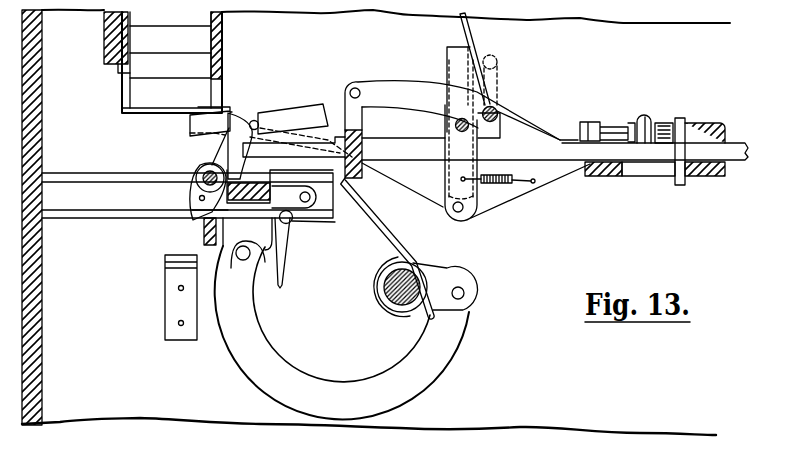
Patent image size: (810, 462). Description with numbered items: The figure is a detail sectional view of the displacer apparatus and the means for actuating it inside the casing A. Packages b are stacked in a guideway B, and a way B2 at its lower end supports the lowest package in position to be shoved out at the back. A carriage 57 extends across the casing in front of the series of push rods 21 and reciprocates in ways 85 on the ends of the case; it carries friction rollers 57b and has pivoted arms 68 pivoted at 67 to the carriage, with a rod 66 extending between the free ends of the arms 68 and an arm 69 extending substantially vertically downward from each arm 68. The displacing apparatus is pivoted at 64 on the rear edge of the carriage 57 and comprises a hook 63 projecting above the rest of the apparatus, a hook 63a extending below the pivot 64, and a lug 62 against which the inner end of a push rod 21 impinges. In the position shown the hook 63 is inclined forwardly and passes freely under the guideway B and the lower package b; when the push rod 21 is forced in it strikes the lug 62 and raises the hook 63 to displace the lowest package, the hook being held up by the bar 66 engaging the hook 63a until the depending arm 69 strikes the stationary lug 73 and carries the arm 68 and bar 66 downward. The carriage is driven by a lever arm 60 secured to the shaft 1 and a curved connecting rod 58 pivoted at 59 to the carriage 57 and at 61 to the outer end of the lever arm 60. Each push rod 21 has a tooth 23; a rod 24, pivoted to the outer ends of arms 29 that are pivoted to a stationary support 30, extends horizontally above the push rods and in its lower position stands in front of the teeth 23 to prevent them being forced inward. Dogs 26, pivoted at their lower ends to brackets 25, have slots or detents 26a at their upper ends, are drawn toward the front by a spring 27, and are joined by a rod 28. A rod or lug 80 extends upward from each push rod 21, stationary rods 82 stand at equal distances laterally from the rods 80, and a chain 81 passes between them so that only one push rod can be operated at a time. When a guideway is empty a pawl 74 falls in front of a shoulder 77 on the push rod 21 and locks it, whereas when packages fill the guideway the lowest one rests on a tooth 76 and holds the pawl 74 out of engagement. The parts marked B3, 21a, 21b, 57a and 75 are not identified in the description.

The casing A is at (42, 316).
The guideway B is at (66, 48).
The package b is at (170, 65).
The ways B2 is at (124, 114).
The magazine wall B3 is at (124, 93).
The shaft 1 is at (385, 291).
The push rod 21 is at (729, 145).
The rod collar 21a is at (679, 185).
The rod nut 21b is at (700, 178).
The tooth 23 is at (501, 134).
The rod 24 is at (498, 60).
The bracket 25 is at (498, 203).
The dog 26 is at (447, 179).
The slot or detent 26a is at (447, 49).
The spring 27 is at (517, 177).
The rod 28 is at (455, 125).
The arm 29 is at (410, 90).
The stationary support 30 is at (358, 138).
The carriage 57 is at (273, 182).
The sear 57a is at (247, 243).
The friction roller 57b is at (334, 222).
The curved connecting rod 58 is at (342, 332).
The pivot 59 is at (244, 260).
The lever arm 60 is at (438, 278).
The pivot 61 is at (466, 294).
The lug 62 is at (224, 150).
The hook 63 is at (234, 120).
The hook 63a is at (190, 200).
The pivot 64 is at (203, 176).
The rod 66 is at (204, 243).
The pivot 67 is at (292, 222).
The pivoted arm 68 is at (200, 221).
The arm 69 is at (284, 284).
The stationary lug 73 is at (165, 265).
The pawl 74 is at (320, 105).
The pin 75 is at (256, 120).
The tooth 76 is at (204, 112).
The shoulder 77 is at (334, 142).
The rod or lug 80 is at (680, 122).
The chain 81 is at (660, 122).
The stationary rod 82 is at (640, 133).
The ways 85 is at (187, 195).